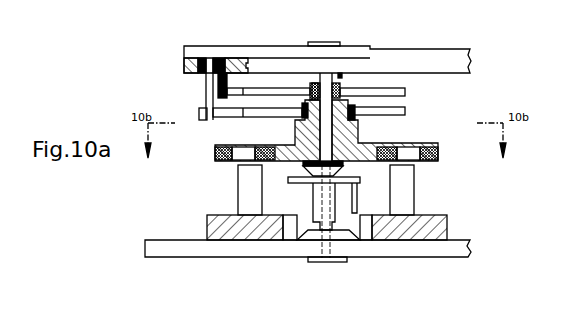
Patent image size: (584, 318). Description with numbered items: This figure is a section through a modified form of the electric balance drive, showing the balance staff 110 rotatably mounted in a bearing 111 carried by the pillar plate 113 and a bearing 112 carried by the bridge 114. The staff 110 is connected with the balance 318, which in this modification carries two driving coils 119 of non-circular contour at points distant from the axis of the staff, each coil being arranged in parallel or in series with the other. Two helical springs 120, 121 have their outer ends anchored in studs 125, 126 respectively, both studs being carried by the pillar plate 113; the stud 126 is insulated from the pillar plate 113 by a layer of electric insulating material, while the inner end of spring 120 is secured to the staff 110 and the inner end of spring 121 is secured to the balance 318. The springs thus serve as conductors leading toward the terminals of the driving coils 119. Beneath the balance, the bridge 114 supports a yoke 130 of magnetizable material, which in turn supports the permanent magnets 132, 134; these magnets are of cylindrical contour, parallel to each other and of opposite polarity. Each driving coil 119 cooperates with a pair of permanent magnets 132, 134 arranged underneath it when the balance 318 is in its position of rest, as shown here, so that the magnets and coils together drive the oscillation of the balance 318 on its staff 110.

The balance staff 110 is at (340, 77).
The bearing 111 is at (334, 43).
The bearing 112 is at (342, 262).
The pillar plate 113 is at (425, 52).
The bridge 114 is at (432, 250).
The driving coil 119 is at (215, 147).
The helical spring 120 is at (267, 90).
The helical spring 121 is at (281, 110).
The stud 125 is at (239, 59).
The stud 126 is at (196, 82).
The yoke 130 is at (210, 225).
The permanent magnet 132 is at (238, 190).
The permanent magnet 134 is at (410, 193).
The balance 318 is at (373, 148).